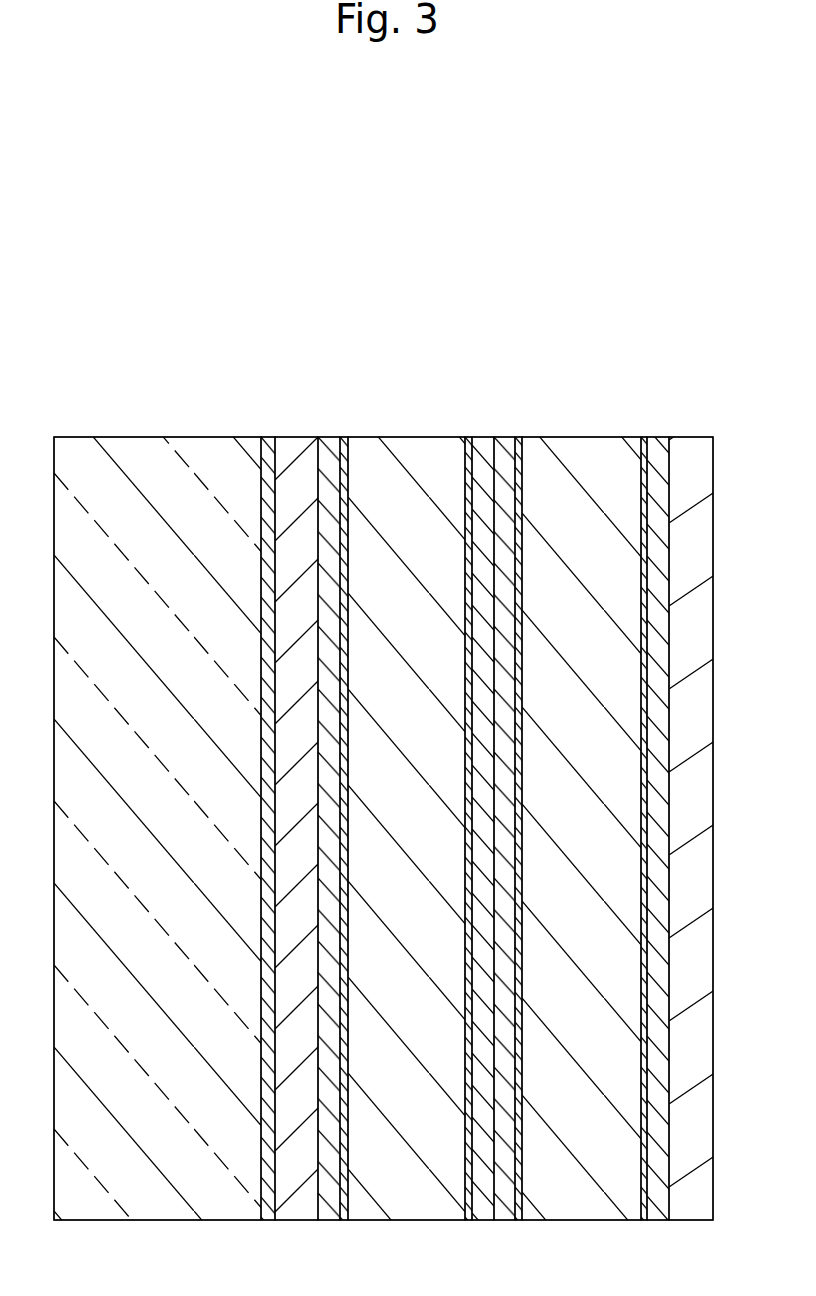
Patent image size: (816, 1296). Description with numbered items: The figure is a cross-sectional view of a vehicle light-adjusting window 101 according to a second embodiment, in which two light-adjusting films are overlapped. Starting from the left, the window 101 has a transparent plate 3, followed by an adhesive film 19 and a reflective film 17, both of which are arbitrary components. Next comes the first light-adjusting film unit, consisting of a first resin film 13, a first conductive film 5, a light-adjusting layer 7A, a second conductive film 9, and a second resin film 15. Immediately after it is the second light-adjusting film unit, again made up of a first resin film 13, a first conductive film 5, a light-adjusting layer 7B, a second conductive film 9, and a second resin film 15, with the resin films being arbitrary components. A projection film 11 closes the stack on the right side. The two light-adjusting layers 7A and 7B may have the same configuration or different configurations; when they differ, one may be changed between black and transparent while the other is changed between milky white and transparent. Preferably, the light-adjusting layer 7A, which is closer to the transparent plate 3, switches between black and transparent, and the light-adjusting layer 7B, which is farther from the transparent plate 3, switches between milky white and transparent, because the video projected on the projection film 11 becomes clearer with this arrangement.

The vehicle light-adjusting window 101 is at (743, 330).
The transparent plate 3 is at (161, 456).
The adhesive film 19 is at (267, 440).
The reflective film 17 is at (297, 443).
The first resin film 13 is at (330, 438).
The first conductive film 5 is at (342, 440).
The light-adjusting layer 7A is at (403, 442).
The second conductive film 9 is at (469, 438).
The second resin film 15 is at (483, 438).
The light-adjusting layer 7B is at (592, 440).
The projection film 11 is at (690, 440).